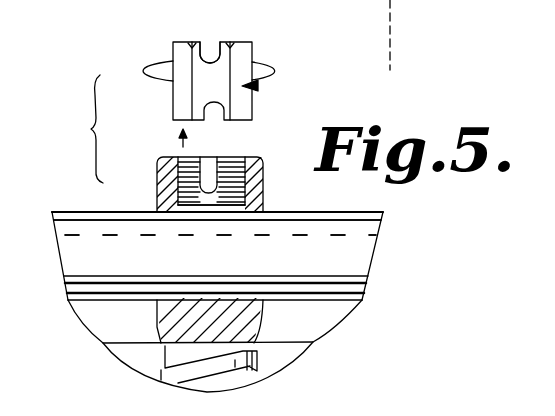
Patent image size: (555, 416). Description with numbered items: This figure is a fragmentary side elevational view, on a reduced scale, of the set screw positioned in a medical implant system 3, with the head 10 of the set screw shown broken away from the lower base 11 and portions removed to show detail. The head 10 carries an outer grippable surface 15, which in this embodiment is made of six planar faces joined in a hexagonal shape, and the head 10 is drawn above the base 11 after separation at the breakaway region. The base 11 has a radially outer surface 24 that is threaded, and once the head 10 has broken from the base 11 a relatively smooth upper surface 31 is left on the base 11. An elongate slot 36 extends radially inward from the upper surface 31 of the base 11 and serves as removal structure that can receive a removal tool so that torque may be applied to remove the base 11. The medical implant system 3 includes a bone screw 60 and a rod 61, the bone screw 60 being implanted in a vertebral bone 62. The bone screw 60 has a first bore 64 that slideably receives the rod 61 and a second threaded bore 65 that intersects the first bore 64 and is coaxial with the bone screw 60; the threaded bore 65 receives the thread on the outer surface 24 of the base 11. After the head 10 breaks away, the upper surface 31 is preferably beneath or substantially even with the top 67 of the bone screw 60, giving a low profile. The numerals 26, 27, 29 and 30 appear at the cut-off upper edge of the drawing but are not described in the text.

The medical implant system 3 is at (356, 212).
The head 10 is at (252, 100).
The base 11 is at (230, 213).
The outer grippable surface 15 is at (186, 50).
The radially outer surface 24 is at (235, 198).
The member 26 is at (350, 0).
The member 27 is at (327, 0).
The axis 29 is at (393, 0).
The member 30 is at (437, 0).
The upper surface 31 is at (242, 155).
The slot 36 is at (224, 174).
The bone screw 60 is at (265, 312).
The rod 61 is at (67, 212).
The vertebral bone 62 is at (283, 352).
The first bore 64 is at (168, 213).
The second threaded bore 65 is at (238, 181).
The top 67 is at (168, 160).